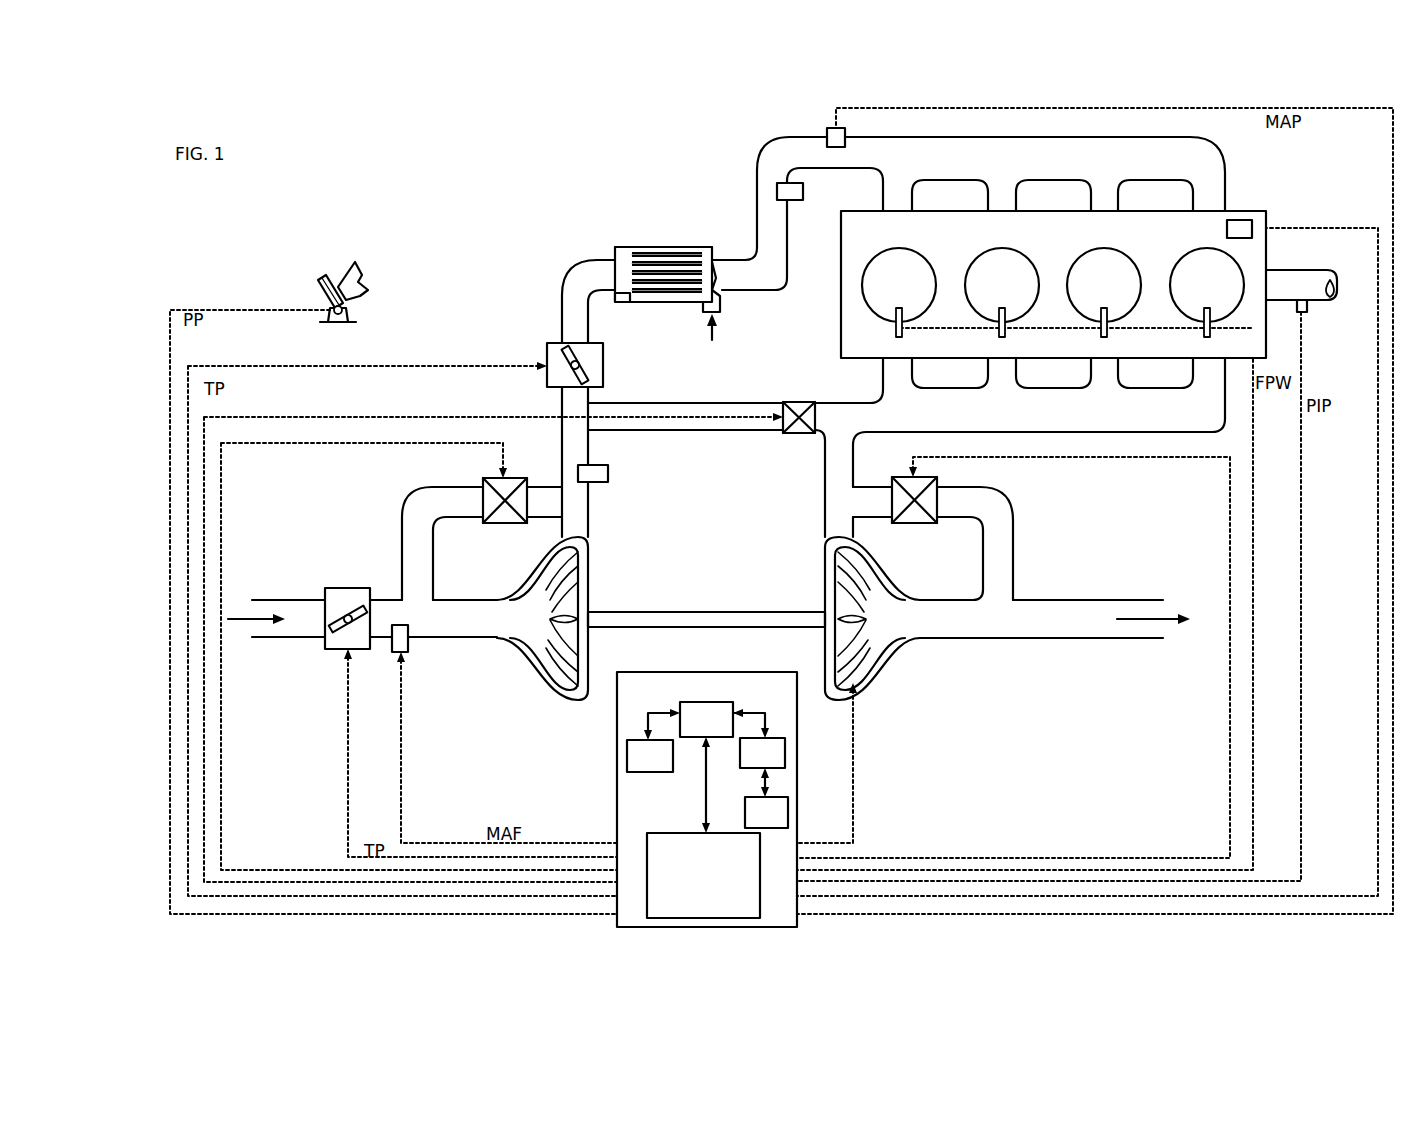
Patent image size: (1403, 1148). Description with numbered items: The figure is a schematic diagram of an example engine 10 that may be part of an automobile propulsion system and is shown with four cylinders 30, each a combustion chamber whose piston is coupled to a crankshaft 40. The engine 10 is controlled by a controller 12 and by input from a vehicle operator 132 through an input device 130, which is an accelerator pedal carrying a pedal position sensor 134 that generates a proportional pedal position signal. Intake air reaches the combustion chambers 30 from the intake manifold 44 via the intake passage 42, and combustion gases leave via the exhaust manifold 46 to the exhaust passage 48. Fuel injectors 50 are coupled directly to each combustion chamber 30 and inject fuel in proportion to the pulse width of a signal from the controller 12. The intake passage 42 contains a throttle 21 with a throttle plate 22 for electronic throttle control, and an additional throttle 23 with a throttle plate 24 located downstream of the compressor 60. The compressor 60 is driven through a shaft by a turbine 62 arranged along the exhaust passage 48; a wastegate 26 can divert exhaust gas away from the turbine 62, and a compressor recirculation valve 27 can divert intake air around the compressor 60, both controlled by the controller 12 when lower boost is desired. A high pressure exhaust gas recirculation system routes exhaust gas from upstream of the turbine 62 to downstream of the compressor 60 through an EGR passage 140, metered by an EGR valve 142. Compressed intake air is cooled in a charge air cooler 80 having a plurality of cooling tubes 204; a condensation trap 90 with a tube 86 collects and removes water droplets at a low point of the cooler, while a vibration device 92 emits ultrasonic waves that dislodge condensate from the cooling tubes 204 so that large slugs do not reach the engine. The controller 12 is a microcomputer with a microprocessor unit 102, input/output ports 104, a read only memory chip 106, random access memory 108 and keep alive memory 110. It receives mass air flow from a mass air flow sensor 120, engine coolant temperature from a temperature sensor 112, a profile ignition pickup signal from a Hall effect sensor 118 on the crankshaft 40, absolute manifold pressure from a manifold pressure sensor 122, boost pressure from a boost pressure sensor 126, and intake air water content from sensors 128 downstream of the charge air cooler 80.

The engine 10 is at (1053, 284).
The controller 12 is at (690, 799).
The throttle 21 is at (340, 588).
The throttle plate 22 is at (356, 606).
The additional throttle 23 is at (547, 343).
The throttle plate 24 is at (588, 373).
The wastegate 26 is at (937, 492).
The compressor recirculation valve 27 is at (483, 488).
The cylinder 30 is at (1053, 285).
The crankshaft 40 is at (1308, 270).
The intake passage 42 is at (374, 618).
The intake manifold 44 is at (968, 213).
The exhaust manifold 46 is at (1020, 447).
The exhaust passage 48 is at (1041, 619).
The fuel injector 50 is at (896, 335).
The compressor 60 is at (547, 664).
The turbine 62 is at (868, 572).
The charge air cooler 80 is at (641, 263).
The tube 86 is at (717, 270).
The condensation trap 90 is at (711, 328).
The vibration device 92 is at (622, 302).
The microprocessor unit 102 is at (645, 716).
The input/output ports 104 is at (703, 875).
The read only memory chip 106 is at (627, 762).
The random access memory 108 is at (785, 741).
The keep alive memory 110 is at (788, 798).
The temperature sensor 112 is at (1245, 220).
The Hall effect sensor 118 is at (1305, 312).
The mass air flow sensor 120 is at (409, 652).
The manifold pressure sensor 122 is at (830, 130).
The boost pressure sensor 126 is at (604, 482).
The sensor 128 is at (803, 196).
The input device 130 is at (320, 291).
The vehicle operator 132 is at (368, 283).
The pedal position sensor 134 is at (350, 312).
The EGR passage 140 is at (685, 403).
The EGR valve 142 is at (800, 402).
The cooling tubes 204 is at (656, 236).